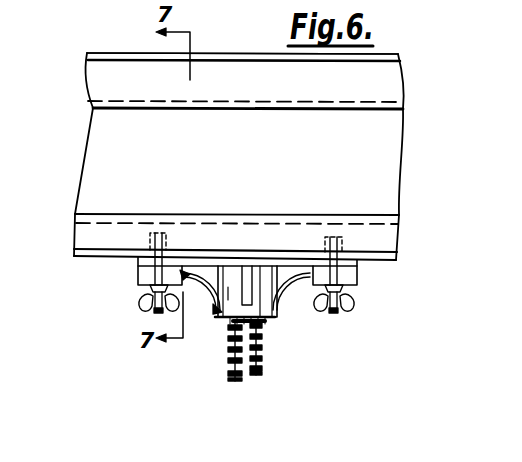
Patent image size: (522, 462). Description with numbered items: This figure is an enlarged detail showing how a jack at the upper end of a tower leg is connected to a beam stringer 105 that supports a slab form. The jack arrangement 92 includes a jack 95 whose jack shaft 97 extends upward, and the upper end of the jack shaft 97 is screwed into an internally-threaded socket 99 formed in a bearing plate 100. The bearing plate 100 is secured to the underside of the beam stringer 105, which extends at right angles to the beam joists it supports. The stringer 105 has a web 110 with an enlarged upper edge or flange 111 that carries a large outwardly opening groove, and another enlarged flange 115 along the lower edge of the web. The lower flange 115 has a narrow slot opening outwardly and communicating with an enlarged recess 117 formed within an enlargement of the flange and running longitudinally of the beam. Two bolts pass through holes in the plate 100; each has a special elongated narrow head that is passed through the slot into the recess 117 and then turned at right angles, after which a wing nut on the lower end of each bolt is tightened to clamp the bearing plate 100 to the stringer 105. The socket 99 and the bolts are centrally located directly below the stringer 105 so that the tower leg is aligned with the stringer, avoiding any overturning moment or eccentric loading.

The jack arrangement 92 is at (281, 346).
The jack 95 is at (233, 362).
The jack shaft 97 is at (250, 380).
The internally-threaded socket 99 is at (218, 319).
The bearing plate 100 is at (138, 263).
The beam stringer 105 is at (100, 135).
The web 110 is at (95, 182).
The upper edge or flange 111 is at (119, 72).
The lower flange 115 is at (88, 230).
The enlarged recess 117 is at (240, 232).